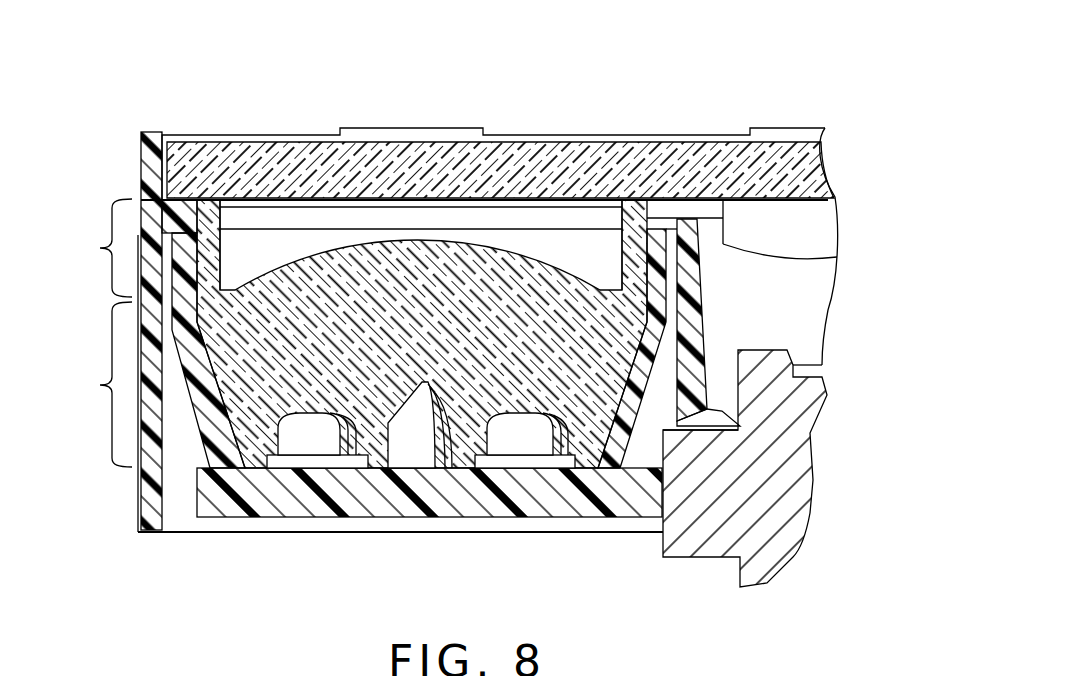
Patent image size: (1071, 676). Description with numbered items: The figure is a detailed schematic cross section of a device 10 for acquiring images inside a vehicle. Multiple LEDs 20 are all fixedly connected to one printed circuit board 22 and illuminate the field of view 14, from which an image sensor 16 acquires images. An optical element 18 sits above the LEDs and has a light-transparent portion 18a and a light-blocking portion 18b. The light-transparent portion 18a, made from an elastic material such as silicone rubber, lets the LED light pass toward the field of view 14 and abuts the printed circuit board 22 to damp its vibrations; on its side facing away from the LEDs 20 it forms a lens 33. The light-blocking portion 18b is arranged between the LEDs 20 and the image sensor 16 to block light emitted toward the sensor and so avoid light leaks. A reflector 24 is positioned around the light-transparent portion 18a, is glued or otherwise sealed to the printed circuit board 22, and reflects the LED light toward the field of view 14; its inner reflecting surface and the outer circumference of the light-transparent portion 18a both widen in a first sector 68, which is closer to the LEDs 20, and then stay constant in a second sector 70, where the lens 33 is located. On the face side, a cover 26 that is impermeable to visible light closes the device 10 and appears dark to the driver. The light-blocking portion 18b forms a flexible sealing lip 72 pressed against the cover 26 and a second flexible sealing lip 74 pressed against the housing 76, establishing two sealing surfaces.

The device 10 is at (131, 116).
The field of view 14 is at (612, 33).
The image sensor 16 is at (828, 411).
The optical element 18 is at (527, 277).
The light-transparent portion 18a is at (576, 345).
The light-blocking portion 18b is at (693, 265).
The LEDs 20 is at (347, 458).
The printed circuit board 22 is at (250, 510).
The reflector 24 is at (255, 437).
The cover 26 is at (270, 162).
The lens 33 is at (433, 236).
The first sector 68 is at (97, 384).
The second sector 70 is at (97, 248).
The flexible sealing lip 72 is at (149, 196).
The second flexible sealing lip 74 is at (719, 410).
The housing 76 is at (702, 431).